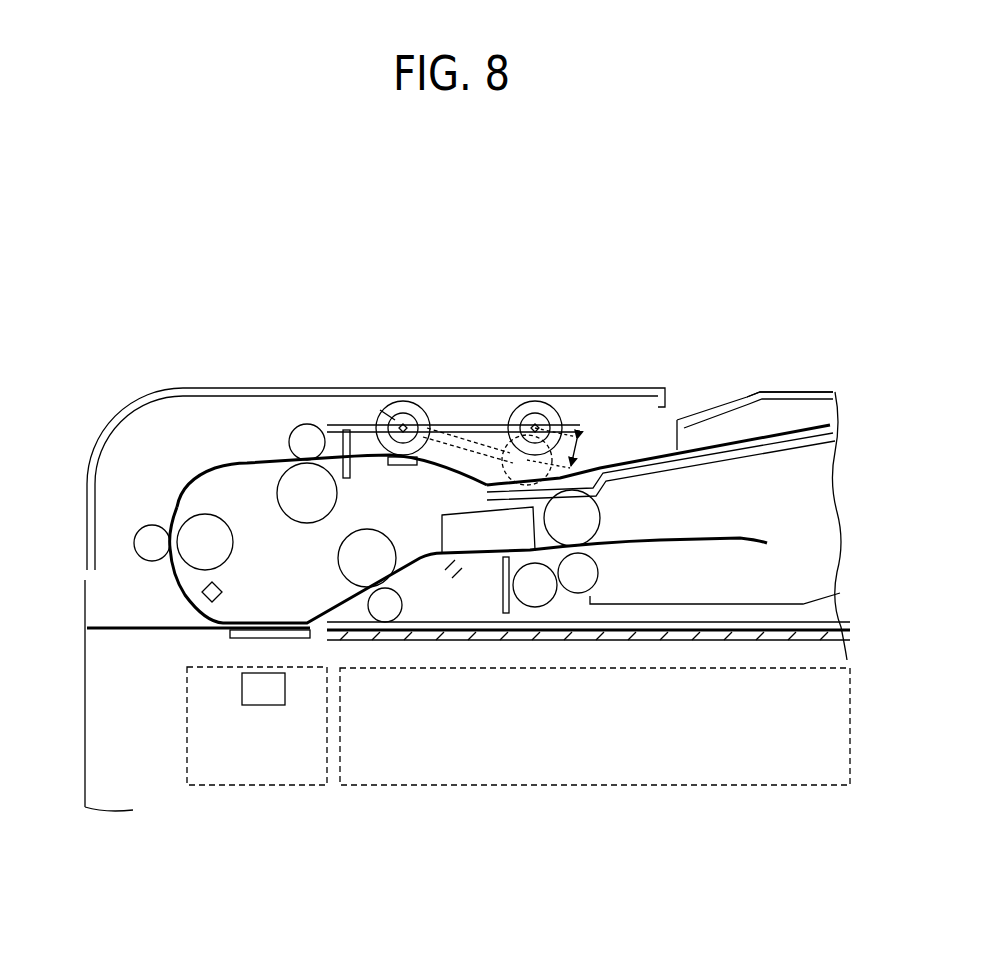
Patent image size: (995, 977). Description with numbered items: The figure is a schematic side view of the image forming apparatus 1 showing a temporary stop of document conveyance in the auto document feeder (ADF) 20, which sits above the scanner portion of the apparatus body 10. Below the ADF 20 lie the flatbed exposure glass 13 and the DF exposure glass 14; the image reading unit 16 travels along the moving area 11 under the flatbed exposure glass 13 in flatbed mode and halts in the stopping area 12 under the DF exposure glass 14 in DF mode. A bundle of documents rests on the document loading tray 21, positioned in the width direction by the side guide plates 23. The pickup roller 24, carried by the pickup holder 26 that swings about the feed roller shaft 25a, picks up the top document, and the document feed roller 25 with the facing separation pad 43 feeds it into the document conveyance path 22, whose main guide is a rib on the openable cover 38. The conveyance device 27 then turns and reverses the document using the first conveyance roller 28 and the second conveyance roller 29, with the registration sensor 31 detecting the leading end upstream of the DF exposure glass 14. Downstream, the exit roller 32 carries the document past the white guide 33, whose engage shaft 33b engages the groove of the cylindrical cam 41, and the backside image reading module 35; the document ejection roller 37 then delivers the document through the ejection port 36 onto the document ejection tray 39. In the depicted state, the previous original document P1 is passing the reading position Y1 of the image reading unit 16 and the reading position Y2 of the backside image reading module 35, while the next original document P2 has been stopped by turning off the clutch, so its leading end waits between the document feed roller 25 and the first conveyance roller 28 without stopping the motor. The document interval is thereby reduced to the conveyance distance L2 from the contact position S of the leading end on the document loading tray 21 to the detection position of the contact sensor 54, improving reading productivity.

The image forming apparatus 1 is at (200, 288).
The apparatus body 10 is at (100, 668).
The moving area 11 is at (632, 785).
The stopping area 12 is at (257, 787).
The flatbed exposure glass 13 is at (410, 643).
The DF exposure glass 14 is at (297, 642).
The image reading unit 16 is at (263, 705).
The auto document feeder (ADF) 20 is at (688, 383).
The document loading tray 21 is at (787, 425).
The document conveyance path 22 is at (173, 505).
The side guide plates 23 is at (760, 407).
The pickup roller 24 is at (533, 398).
The document feed roller 25 is at (407, 403).
The feed roller shaft 25a is at (380, 410).
The pickup holder 26 is at (465, 410).
The conveyance device 27 is at (157, 472).
The first conveyance roller 28 is at (278, 496).
The second conveyance roller 29 is at (215, 540).
The registration sensor 31 is at (224, 590).
The exit roller 32 is at (338, 556).
The white guide 33 is at (477, 567).
The engage shaft 33b is at (507, 615).
The backside image reading module 35 is at (485, 490).
The ejection port 36 is at (602, 557).
The document ejection roller 37 is at (602, 505).
The cover 38 is at (606, 388).
The document ejection tray 39 is at (722, 603).
The cylindrical cam 41 is at (555, 598).
The separation pad 43 is at (400, 468).
The contact sensor 54 is at (345, 440).
The contact position S is at (488, 503).
The previous original document P1 is at (743, 540).
The original document P2 is at (643, 453).
The reading position Y1 is at (265, 642).
The reading position Y2 is at (480, 540).
The conveyance distance L2 is at (347, 467).